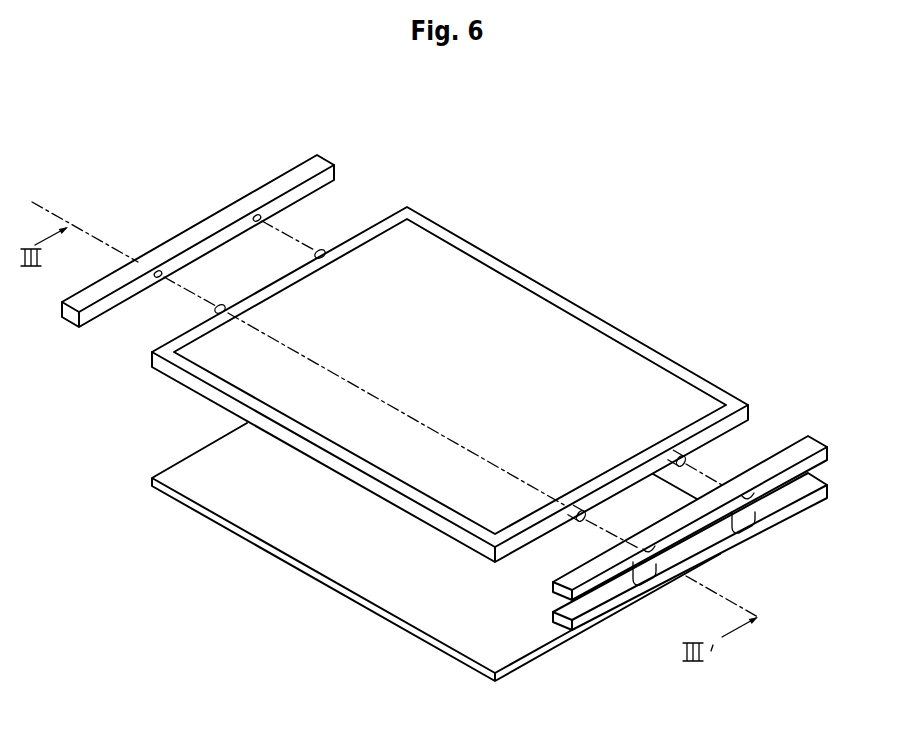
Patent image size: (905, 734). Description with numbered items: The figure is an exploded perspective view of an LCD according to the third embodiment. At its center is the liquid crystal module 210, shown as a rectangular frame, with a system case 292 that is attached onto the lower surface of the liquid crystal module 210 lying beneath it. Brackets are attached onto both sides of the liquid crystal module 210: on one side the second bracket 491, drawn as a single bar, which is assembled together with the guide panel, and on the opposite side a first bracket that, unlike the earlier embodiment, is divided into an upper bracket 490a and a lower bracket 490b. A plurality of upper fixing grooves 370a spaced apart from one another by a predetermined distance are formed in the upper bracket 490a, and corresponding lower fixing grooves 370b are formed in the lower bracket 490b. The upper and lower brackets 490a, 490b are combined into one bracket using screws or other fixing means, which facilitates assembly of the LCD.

The liquid crystal module 210 is at (585, 275).
The second bracket 491 is at (317, 155).
The system case 292 is at (380, 585).
The upper bracket 490a is at (809, 438).
The lower bracket 490b is at (796, 505).
The upper fixing grooves 370a is at (750, 494).
The lower fixing grooves 370b is at (751, 528).